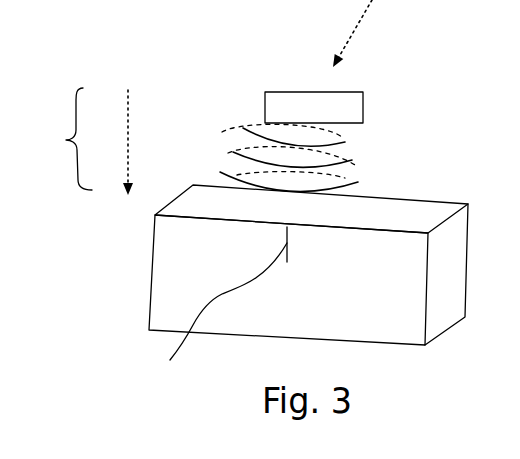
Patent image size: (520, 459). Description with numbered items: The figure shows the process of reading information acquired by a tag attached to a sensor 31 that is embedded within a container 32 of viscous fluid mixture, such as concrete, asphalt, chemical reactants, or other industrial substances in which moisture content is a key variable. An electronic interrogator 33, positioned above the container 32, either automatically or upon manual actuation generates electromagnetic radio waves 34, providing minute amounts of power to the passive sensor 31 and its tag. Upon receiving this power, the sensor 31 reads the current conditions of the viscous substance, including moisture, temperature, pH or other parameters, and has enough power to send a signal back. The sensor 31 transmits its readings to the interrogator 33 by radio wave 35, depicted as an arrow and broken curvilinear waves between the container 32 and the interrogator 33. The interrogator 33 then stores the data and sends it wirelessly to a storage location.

The sensor 31 is at (202, 311).
The container 32 is at (140, 266).
The interrogator 33 is at (296, 70).
The electromagnetic radio waves 34 is at (85, 141).
The radio wave 35 is at (350, 145).